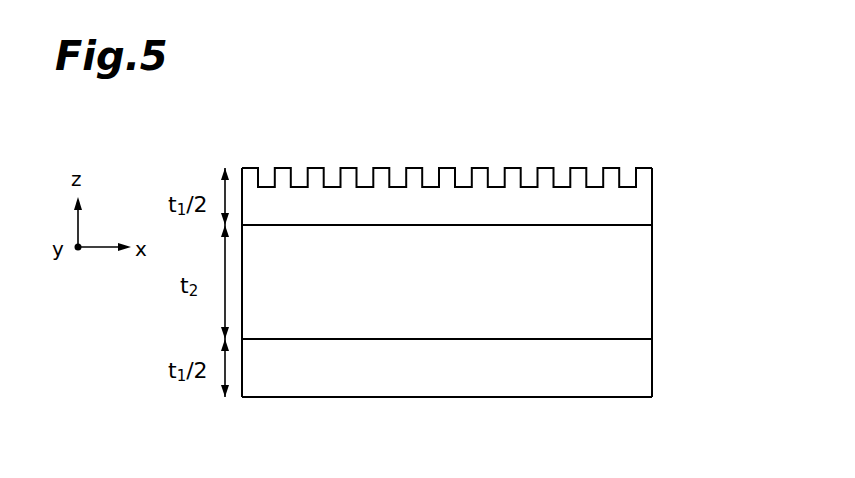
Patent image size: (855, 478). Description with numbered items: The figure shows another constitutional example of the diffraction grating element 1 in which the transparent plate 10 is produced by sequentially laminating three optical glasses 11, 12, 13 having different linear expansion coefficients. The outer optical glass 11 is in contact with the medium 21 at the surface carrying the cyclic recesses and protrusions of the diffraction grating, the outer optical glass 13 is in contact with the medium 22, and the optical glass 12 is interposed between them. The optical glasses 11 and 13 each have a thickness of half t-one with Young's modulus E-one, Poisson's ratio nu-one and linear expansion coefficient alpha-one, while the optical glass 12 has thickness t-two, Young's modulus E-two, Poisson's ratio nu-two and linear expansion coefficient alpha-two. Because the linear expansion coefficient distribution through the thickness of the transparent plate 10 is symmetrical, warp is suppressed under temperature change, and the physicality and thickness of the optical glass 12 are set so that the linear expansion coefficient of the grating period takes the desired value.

The diffraction grating element 1 is at (772, 427).
The transparent plate 10 is at (722, 187).
The optical glass 11 is at (628, 205).
The optical glass 12 is at (630, 280).
The optical glass 13 is at (632, 360).
The medium 21 is at (600, 143).
The medium 22 is at (620, 420).